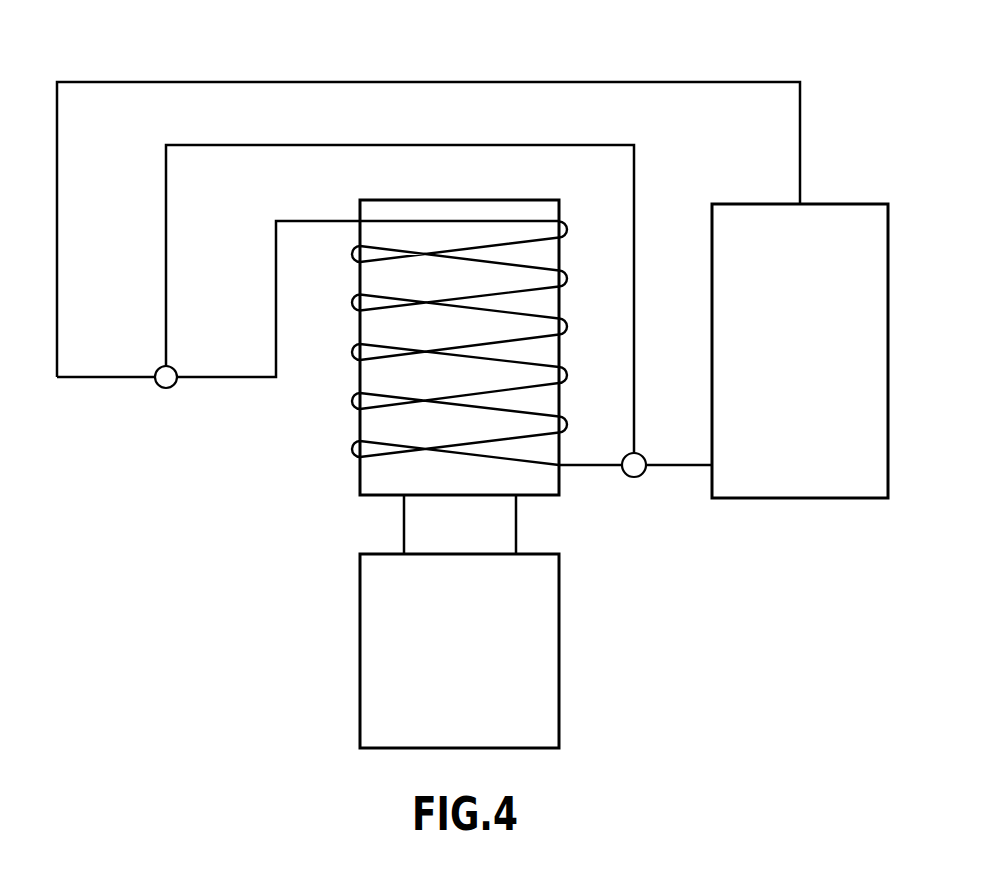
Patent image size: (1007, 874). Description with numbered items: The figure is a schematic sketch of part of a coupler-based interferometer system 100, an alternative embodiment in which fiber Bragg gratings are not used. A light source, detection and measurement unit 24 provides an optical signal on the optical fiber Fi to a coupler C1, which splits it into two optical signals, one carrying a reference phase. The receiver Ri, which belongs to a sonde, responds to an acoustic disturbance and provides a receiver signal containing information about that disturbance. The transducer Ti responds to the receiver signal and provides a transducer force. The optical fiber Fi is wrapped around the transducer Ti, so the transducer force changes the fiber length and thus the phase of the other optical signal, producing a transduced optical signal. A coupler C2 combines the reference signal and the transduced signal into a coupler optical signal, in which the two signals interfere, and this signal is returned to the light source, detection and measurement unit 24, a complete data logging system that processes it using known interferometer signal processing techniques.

The coupler-based interferometer system 100 is at (472, 374).
The light source, detection and measurement unit 24 is at (822, 498).
The optical fiber Fi is at (690, 83).
The coupler C1 is at (163, 389).
The coupler C2 is at (629, 477).
The transducer Ti is at (475, 200).
The receiver Ri is at (559, 703).